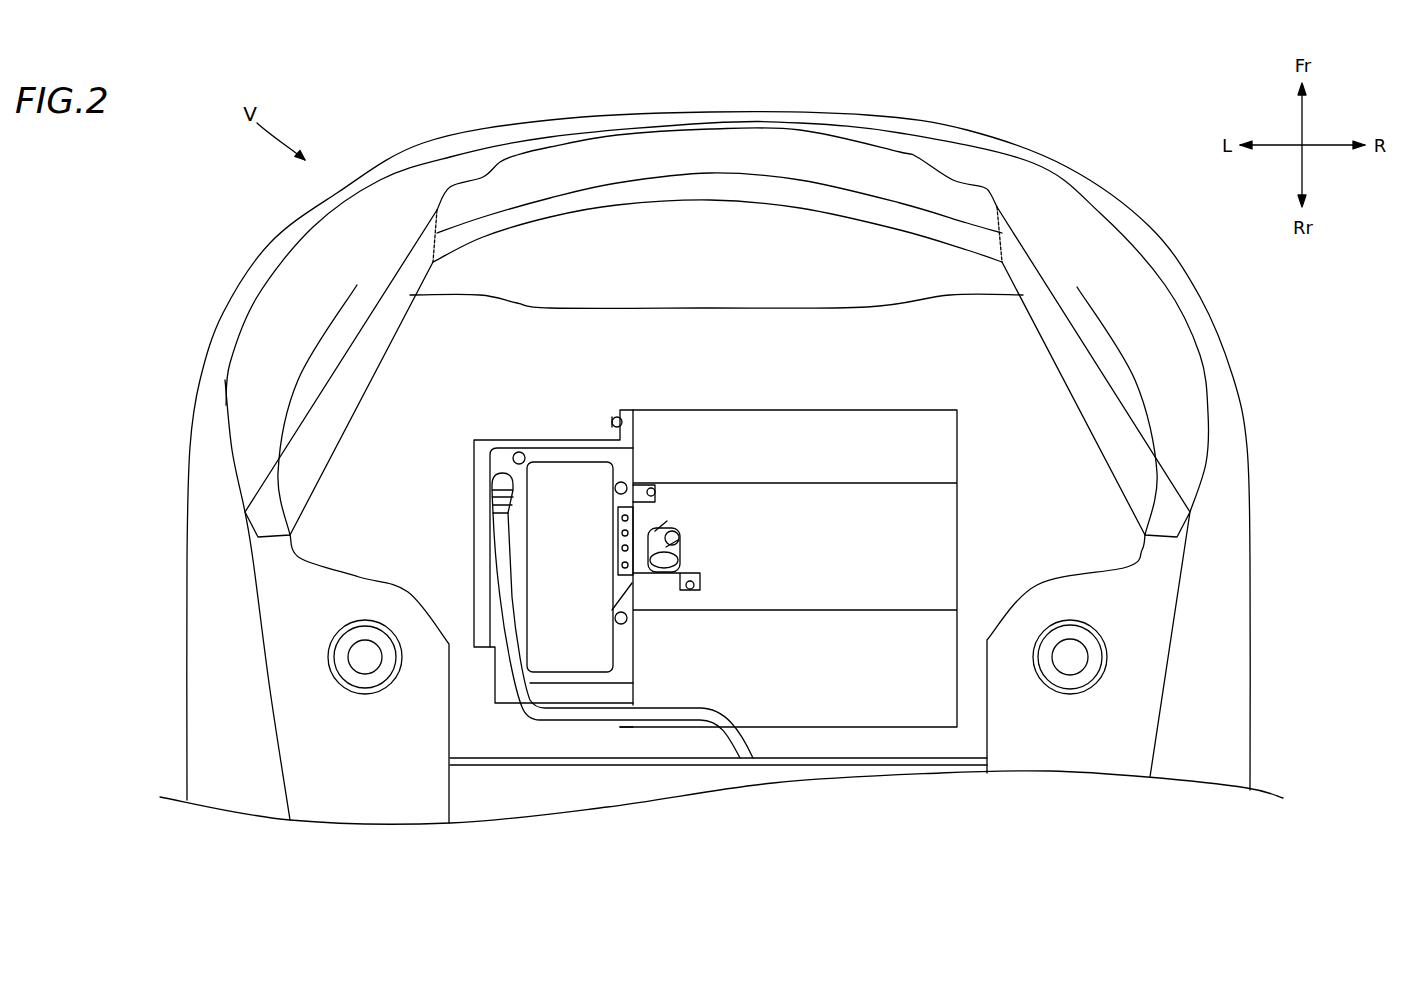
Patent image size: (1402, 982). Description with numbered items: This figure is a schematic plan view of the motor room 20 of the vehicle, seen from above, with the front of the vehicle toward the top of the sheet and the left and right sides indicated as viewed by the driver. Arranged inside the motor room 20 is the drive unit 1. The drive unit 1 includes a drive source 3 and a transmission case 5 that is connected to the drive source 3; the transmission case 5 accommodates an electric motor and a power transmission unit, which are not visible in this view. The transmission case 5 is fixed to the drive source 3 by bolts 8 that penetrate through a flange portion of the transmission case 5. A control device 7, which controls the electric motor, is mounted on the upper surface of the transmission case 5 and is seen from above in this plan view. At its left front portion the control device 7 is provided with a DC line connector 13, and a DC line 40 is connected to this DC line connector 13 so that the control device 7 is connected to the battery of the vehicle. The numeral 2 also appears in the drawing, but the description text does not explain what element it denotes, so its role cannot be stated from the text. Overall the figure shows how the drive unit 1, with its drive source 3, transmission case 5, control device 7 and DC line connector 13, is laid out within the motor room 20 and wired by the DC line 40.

The drive unit 1 is at (817, 741).
The cross member 2 is at (845, 760).
The drive source 3 is at (892, 738).
The transmission case 5 is at (559, 429).
The control device 7 is at (592, 683).
The bolts 8 is at (610, 424).
The DC line connector 13 is at (502, 476).
The motor room 20 is at (762, 192).
The DC line 40 is at (520, 672).